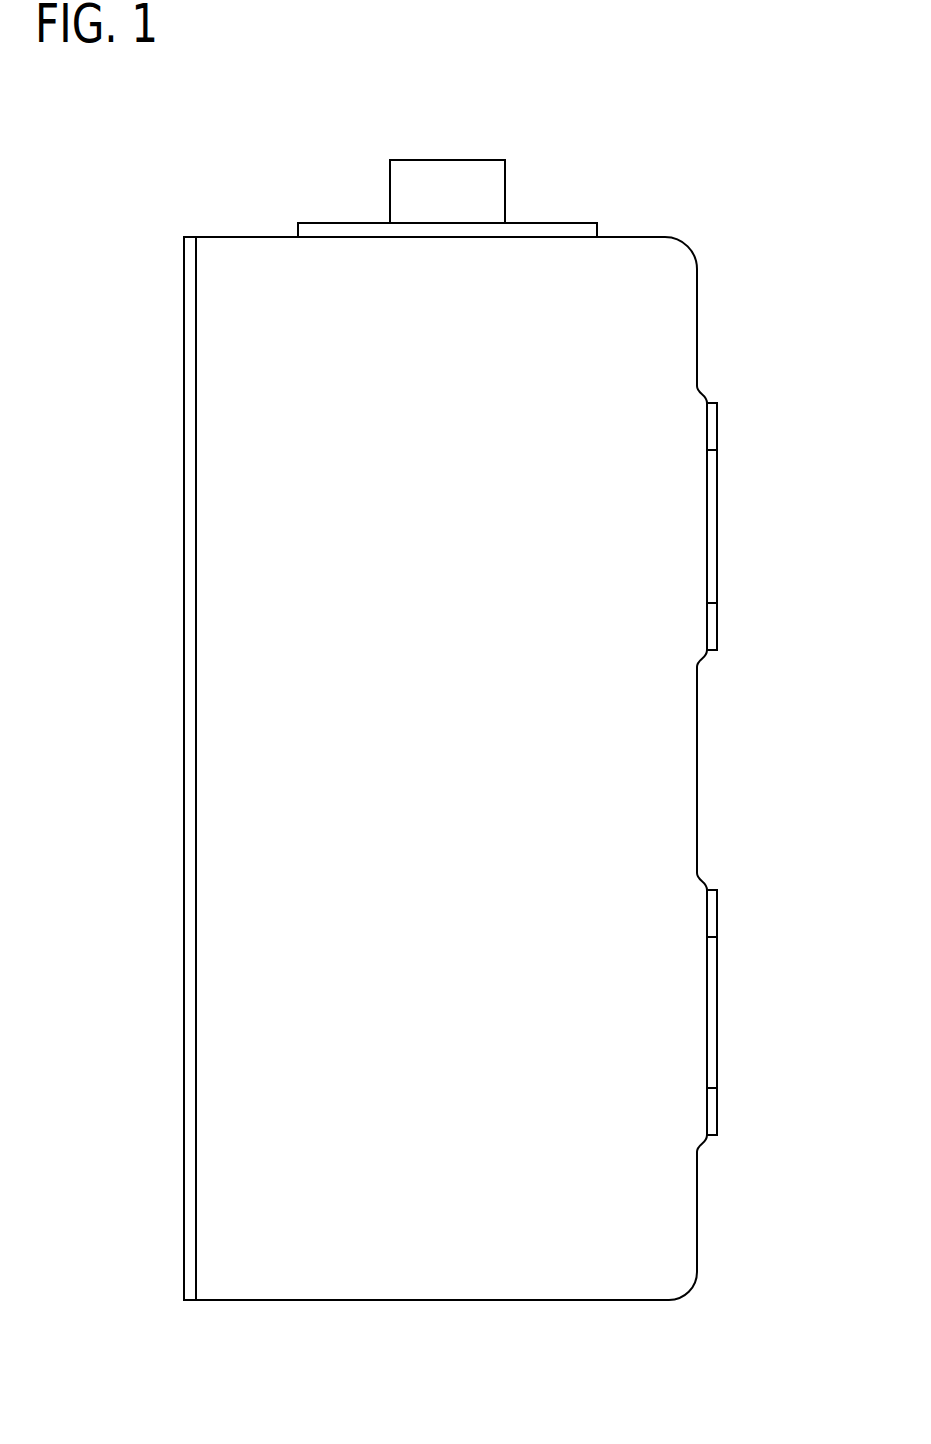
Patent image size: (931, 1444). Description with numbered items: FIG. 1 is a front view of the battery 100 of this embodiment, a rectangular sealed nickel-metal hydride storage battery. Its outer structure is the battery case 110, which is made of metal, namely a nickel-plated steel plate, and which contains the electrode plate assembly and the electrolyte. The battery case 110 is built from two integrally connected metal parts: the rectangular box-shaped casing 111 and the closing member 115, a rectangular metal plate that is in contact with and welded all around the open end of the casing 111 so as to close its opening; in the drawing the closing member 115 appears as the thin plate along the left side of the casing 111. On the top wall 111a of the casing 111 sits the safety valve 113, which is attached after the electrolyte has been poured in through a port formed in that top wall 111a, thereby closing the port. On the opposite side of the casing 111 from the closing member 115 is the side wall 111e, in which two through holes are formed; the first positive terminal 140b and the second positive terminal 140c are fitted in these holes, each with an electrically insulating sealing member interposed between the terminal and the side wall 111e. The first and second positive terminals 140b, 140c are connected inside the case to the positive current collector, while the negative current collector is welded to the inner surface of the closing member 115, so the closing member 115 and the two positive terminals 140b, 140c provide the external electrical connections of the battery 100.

The battery 100 is at (688, 188).
The battery case 110 is at (253, 272).
The casing 111 is at (670, 308).
The top wall 111a is at (278, 233).
The side wall 111e is at (697, 1200).
The safety valve 113 is at (460, 177).
The closing member 115 is at (184, 343).
The first positive terminal 140b is at (715, 628).
The second positive terminal 140c is at (718, 912).